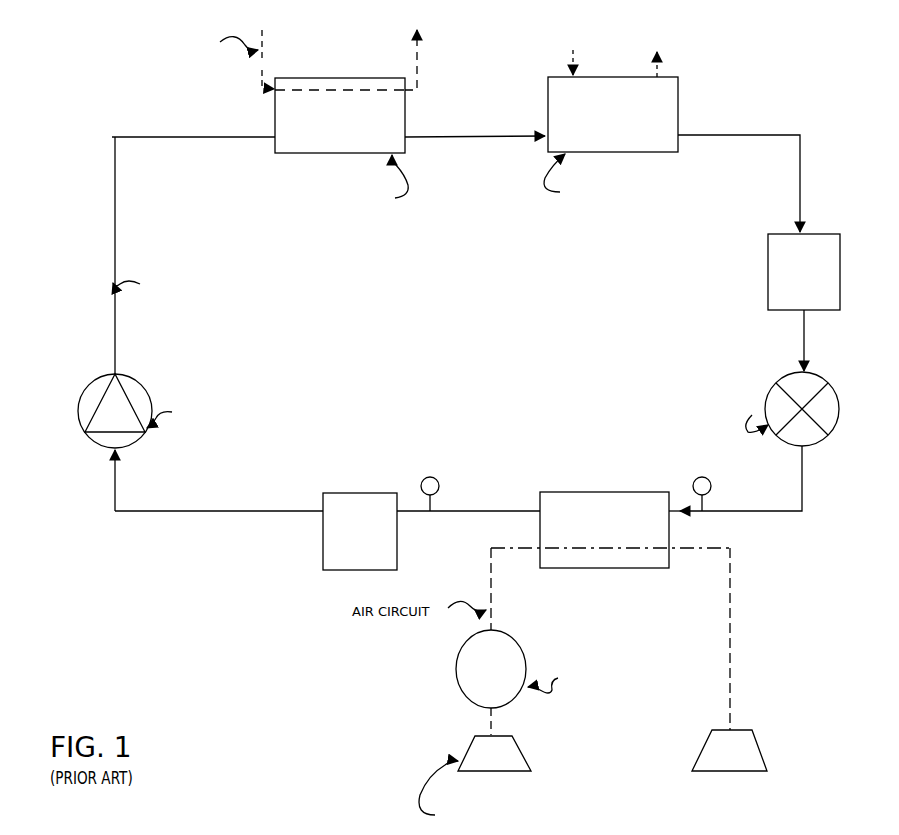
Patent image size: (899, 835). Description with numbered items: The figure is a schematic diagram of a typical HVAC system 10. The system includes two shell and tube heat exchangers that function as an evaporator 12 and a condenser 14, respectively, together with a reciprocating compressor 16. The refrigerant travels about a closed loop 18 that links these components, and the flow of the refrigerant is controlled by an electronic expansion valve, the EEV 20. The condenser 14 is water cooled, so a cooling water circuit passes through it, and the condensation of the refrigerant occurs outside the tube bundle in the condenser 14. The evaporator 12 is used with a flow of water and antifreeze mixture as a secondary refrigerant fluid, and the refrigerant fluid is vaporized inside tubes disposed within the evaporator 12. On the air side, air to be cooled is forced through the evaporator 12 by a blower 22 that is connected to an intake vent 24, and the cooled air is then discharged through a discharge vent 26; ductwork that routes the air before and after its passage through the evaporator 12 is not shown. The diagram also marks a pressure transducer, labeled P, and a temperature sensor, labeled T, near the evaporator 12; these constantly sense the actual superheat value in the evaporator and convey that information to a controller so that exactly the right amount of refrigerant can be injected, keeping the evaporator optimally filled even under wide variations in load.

The HVAC system 10 is at (781, 70).
The evaporator 12 is at (612, 575).
The condenser 14 is at (334, 78).
The reciprocating compressor 16 is at (143, 382).
The closed loop 18 is at (780, 512).
The EEV 20 is at (838, 400).
The blower 22 is at (520, 641).
The intake vent 24 is at (525, 750).
The discharge vent 26 is at (763, 744).